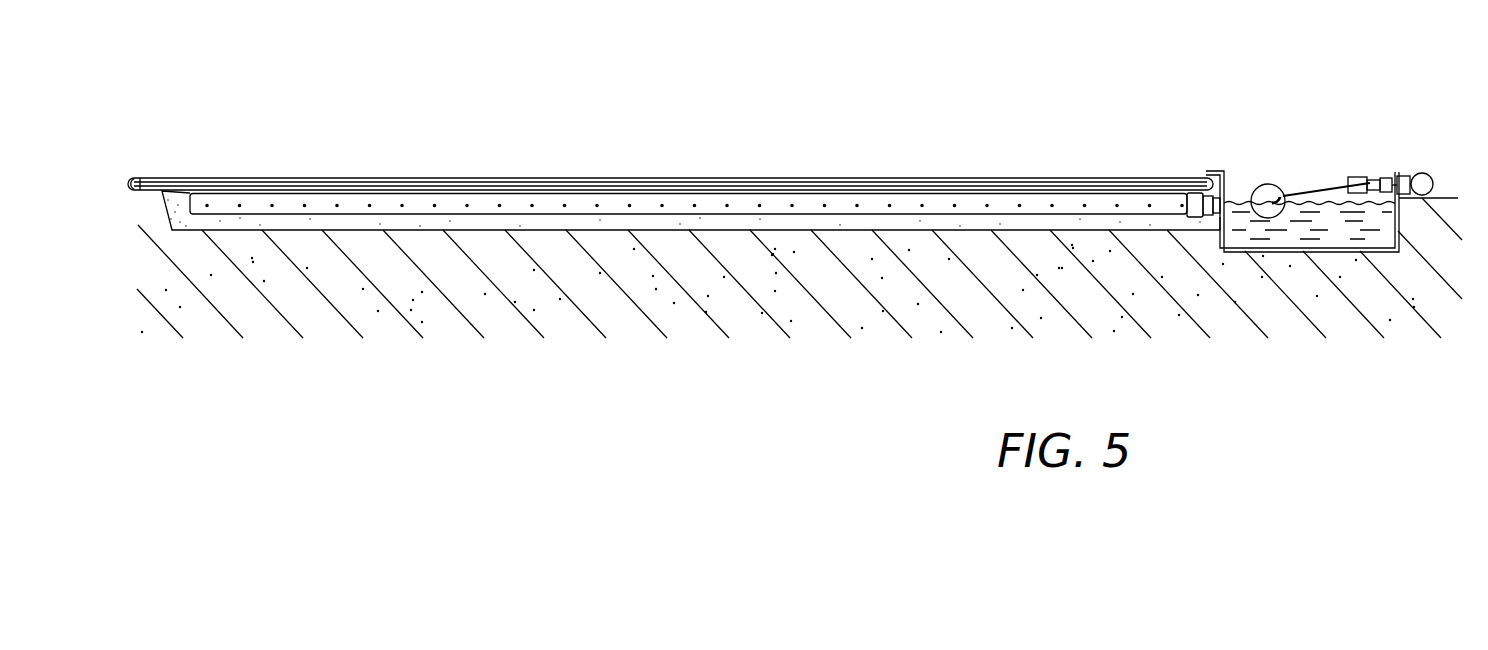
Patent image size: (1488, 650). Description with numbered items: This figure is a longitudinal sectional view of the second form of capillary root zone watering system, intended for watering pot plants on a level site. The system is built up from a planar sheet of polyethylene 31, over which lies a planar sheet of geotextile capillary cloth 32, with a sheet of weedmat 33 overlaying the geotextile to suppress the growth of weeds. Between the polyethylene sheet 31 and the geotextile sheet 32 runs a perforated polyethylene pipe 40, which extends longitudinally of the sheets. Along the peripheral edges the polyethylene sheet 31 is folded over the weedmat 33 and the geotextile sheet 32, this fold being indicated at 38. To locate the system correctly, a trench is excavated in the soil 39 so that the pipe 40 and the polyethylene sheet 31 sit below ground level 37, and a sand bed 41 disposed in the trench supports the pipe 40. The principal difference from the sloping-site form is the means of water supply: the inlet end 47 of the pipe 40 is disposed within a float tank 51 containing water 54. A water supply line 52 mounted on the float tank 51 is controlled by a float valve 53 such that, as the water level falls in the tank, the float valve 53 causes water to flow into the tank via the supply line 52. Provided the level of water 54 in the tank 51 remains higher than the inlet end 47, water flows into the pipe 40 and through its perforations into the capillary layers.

The planar sheet of polyethylene 31 is at (520, 187).
The planar sheet of geotextile capillary cloth 32 is at (588, 187).
The sheet of weedmat 33 is at (682, 182).
The ground level 37 is at (133, 183).
The fold 38 is at (147, 177).
The soil 39 is at (740, 300).
The polyethylene pipe 40 is at (838, 205).
The sand bed 41 is at (597, 223).
The inlet end 47 is at (1188, 158).
The float tank 51 is at (1332, 252).
The water supply line 52 is at (1423, 173).
The float valve 53 is at (1367, 177).
The water 54 is at (1303, 227).